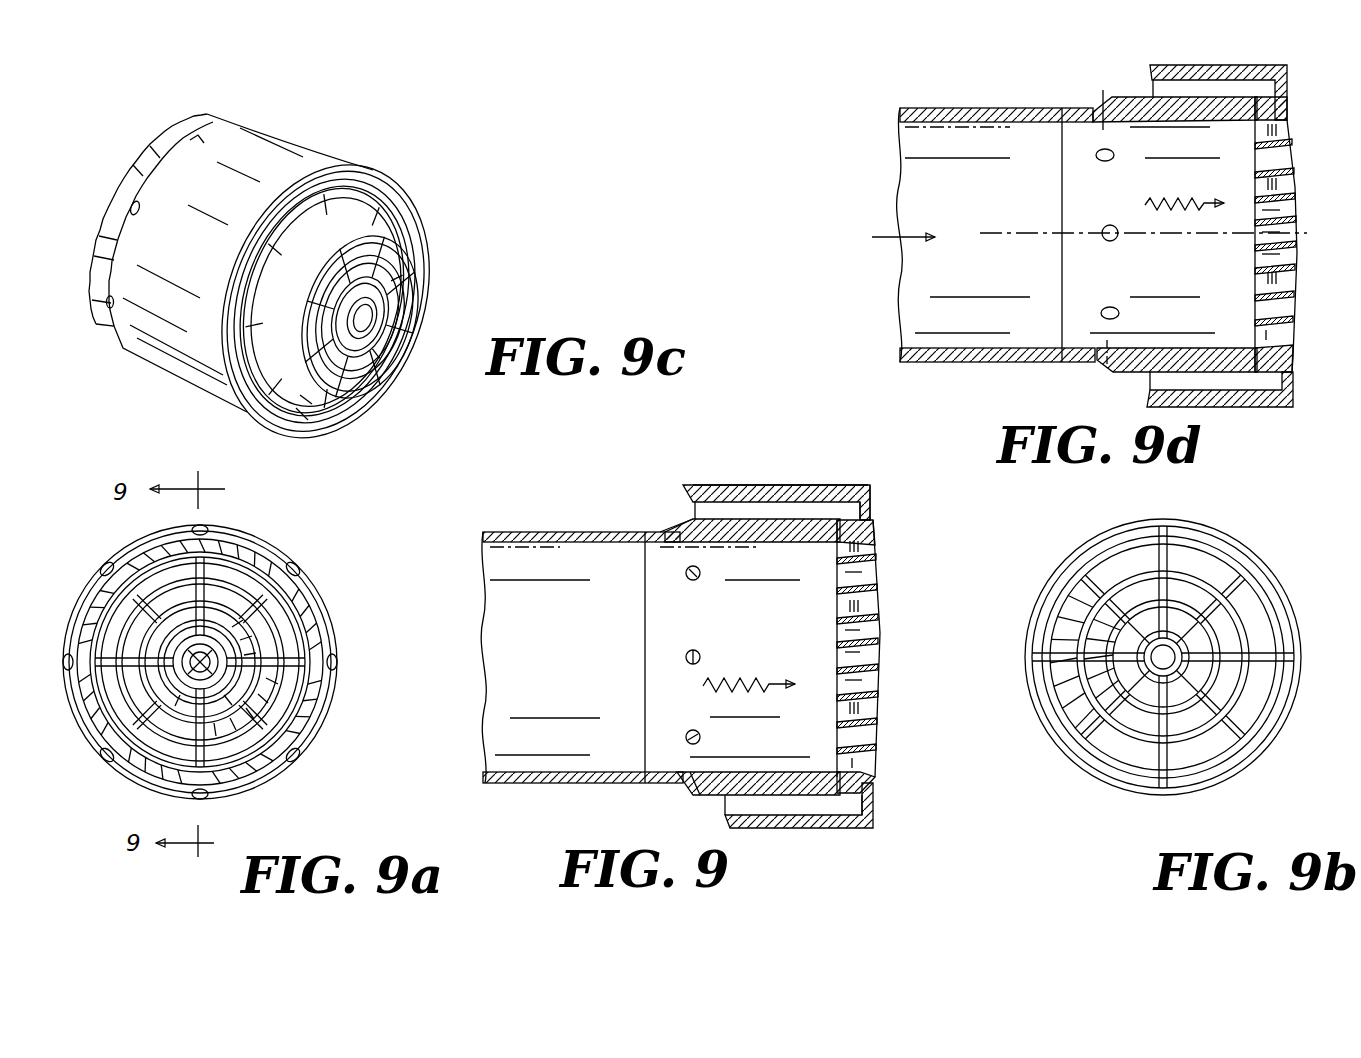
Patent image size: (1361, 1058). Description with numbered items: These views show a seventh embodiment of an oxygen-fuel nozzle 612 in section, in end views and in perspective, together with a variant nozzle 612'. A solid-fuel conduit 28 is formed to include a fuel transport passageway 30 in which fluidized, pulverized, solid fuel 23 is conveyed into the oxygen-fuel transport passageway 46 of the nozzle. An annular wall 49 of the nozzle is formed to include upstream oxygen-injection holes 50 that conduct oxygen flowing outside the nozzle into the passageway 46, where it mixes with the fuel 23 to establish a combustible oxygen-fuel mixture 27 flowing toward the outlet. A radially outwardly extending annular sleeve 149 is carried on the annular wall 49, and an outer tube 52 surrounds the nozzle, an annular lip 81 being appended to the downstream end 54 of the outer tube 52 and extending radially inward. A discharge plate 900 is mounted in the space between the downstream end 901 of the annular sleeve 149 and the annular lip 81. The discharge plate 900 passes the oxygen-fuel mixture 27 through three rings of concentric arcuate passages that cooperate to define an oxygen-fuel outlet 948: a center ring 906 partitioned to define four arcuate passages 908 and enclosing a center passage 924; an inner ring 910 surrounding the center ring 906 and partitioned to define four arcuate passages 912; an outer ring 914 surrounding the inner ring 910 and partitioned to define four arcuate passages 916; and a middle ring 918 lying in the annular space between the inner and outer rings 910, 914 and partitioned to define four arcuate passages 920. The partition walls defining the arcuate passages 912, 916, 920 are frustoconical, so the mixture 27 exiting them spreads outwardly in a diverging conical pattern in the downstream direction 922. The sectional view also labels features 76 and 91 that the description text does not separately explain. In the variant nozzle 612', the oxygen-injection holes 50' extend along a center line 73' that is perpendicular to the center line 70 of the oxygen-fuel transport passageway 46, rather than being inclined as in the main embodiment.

In FIG. 9D, the fluidized, pulverized, solid fuel 23 is at (896, 256).
In FIG. 9, the combustible oxygen-fuel mixture 27 is at (741, 683).
In FIG. 9D, the combustible oxygen-fuel mixture 27 is at (1170, 206).
In FIG. 9, the solid-fuel conduit 28 is at (503, 530).
In FIG. 9D, the solid-fuel conduit 28 is at (1024, 100).
In FIG. 9, the fuel transport passageway 30 is at (538, 560).
In FIG. 9D, the fuel transport passageway 30 is at (900, 136).
In FIG. 9, the oxygen-fuel transport passageway 46 is at (664, 703).
In FIG. 9D, the oxygen-fuel transport passageway 46 is at (1226, 312).
In FIG. 9C, the annular wall 49 is at (160, 147).
In FIG. 9, the annular wall 49 is at (658, 530).
In FIG. 9C, the upstream oxygen-injection holes 50 is at (121, 276).
In FIG. 9, the upstream oxygen-injection holes 50 is at (675, 692).
In FIG. 9D, the oxygen-injection holes 50' is at (1112, 271).
In FIG. 9, the outer tube 52 is at (772, 487).
In FIG. 9, the downstream end of outer tube 54 is at (829, 484).
In FIG. 9D, the center line 70 is at (1043, 240).
In FIG. 9D, the center line of oxygen-injection holes 73' is at (1076, 245).
In FIG. 9, the chamfer 76 is at (690, 796).
In FIG. 9, the annular lip 81 is at (873, 508).
In FIG. 9C, the slots 91 is at (420, 236).
In FIG. 9C, the annular sleeve 149 is at (312, 158).
In FIG. 9, the annular sleeve 149 is at (718, 520).
In FIG. 9C, the oxygen-fuel nozzle 612 is at (231, 252).
In FIG. 9A, the oxygen-fuel nozzle 612 is at (208, 654).
In FIG. 9B, the oxygen-fuel nozzle 612 is at (1163, 647).
In FIG. 9, the oxygen-fuel nozzle 612 is at (722, 628).
In FIG. 9D, the oxygen-fuel nozzle 612' is at (1193, 216).
In FIG. 9C, the discharge plate 900 is at (432, 217).
In FIG. 9A, the discharge plate 900 is at (200, 662).
In FIG. 9B, the discharge plate 900 is at (1257, 548).
In FIG. 9, the discharge plate 900 is at (848, 808).
In FIG. 9D, the discharge plate 900 is at (1276, 234).
In FIG. 9, the downstream end of annular sleeve 901 is at (827, 784).
In FIG. 9C, the center ring 906 is at (362, 308).
In FIG. 9, the center ring 906 is at (886, 633).
In FIG. 9C, the arcuate passages 908 is at (353, 277).
In FIG. 9C, the inner ring 910 is at (412, 278).
In FIG. 9, the inner ring 910 is at (886, 603).
In FIG. 9C, the arcuate passages 912 is at (322, 398).
In FIG. 9, the outer ring 914 is at (885, 528).
In FIG. 9C, the arcuate passages 916 is at (310, 414).
In FIG. 9, the middle ring 918 is at (886, 571).
In FIG. 9C, the arcuate passages 920 is at (352, 374).
In FIG. 9, the downstream direction 922 is at (780, 427).
In FIG. 9C, the center passage 924 is at (378, 330).
In FIG. 9, the center passage 924 is at (886, 660).
In FIG. 9, the oxygen-fuel outlet 948 is at (888, 548).